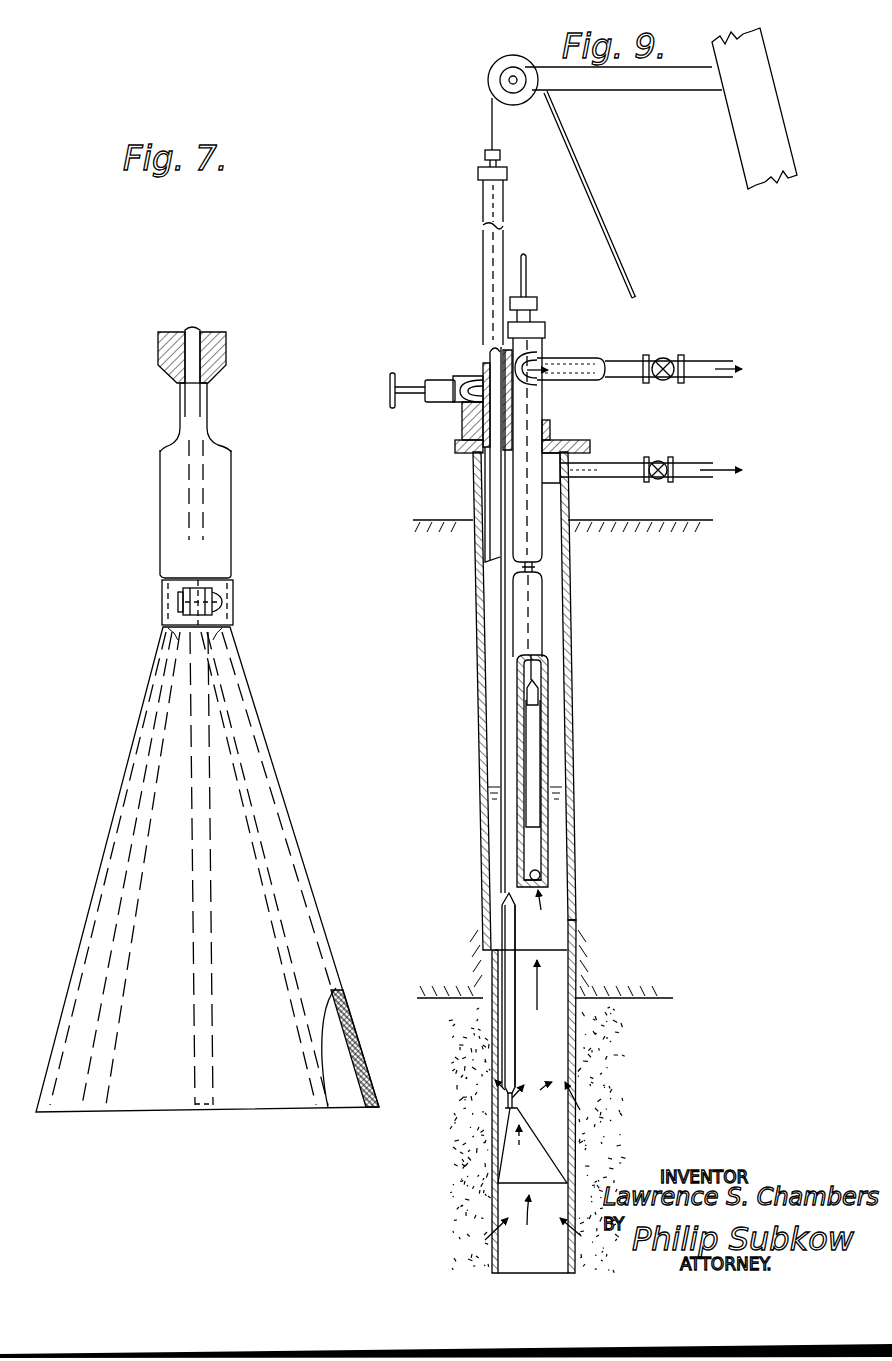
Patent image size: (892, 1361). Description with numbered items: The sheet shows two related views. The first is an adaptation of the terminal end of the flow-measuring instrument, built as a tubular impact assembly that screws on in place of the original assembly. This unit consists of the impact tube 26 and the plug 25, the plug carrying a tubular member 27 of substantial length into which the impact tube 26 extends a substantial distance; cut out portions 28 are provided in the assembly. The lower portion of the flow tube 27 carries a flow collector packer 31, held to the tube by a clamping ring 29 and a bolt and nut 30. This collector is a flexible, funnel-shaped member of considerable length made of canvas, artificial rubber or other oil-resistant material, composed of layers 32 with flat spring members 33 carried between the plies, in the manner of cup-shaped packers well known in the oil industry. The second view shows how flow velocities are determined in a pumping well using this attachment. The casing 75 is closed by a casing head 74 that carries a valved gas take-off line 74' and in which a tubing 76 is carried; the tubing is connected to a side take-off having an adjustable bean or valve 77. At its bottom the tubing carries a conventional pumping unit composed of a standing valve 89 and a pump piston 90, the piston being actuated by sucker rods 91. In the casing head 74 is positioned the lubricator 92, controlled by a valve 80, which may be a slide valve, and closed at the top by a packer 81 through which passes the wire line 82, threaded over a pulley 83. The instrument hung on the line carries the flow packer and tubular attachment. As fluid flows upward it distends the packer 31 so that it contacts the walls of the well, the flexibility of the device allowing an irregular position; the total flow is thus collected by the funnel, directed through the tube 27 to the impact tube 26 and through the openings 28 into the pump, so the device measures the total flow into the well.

In FIG. 7, the plug 25 is at (225, 354).
In FIG. 7, the impact tube 26 is at (192, 397).
In FIG. 7, the tubular member 27 is at (233, 484).
In FIG. 7, the cut out portions 28 is at (218, 443).
In FIG. 7, the clamping ring 29 is at (230, 607).
In FIG. 7, the bolt and nut 30 is at (220, 600).
In FIG. 7, the flow collector packer 31 is at (259, 721).
In FIG. 9, the flow collector packer 31 is at (510, 1170).
In FIG. 7, the layers 32 is at (345, 1125).
In FIG. 7, the flat spring members 33 is at (352, 1048).
In FIG. 9, the casing head 74 is at (548, 450).
In FIG. 9, the valved gas take-off line 74' is at (671, 450).
In FIG. 9, the casing 75 is at (570, 589).
In FIG. 9, the tubing 76 is at (540, 412).
In FIG. 9, the adjustable bean or valve 77 is at (598, 363).
In FIG. 9, the valve 80 is at (452, 402).
In FIG. 9, the packer 81 is at (500, 165).
In FIG. 9, the wire line 82 is at (488, 125).
In FIG. 9, the pulley 83 is at (518, 74).
In FIG. 9, the standing valve 89 is at (548, 880).
In FIG. 9, the pump piston 90 is at (532, 768).
In FIG. 9, the sucker rods 91 is at (528, 282).
In FIG. 9, the lubricator 92 is at (484, 318).